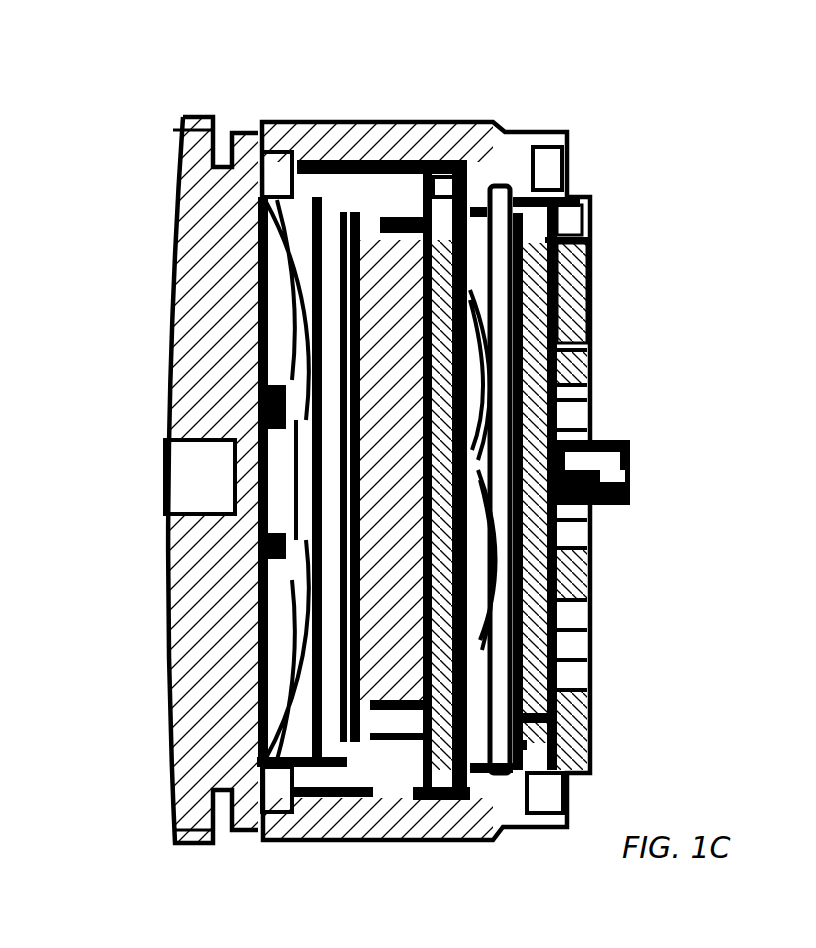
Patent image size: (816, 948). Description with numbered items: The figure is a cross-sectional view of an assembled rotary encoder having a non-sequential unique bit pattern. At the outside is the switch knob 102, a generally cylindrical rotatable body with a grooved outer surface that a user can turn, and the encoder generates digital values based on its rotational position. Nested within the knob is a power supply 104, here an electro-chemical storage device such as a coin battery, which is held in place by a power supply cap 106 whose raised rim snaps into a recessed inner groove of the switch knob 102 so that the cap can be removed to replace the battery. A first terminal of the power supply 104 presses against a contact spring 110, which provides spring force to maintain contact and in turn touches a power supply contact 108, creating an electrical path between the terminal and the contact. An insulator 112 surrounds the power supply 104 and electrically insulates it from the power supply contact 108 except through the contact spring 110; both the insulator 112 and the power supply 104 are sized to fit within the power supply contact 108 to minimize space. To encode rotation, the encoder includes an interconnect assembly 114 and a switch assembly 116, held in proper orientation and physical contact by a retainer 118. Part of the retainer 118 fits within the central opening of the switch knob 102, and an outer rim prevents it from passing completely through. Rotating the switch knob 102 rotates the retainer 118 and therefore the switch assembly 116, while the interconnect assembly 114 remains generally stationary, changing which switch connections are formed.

The switch knob 102 is at (487, 813).
The power supply 104 is at (398, 628).
The power supply cap 106 is at (158, 390).
The power supply contact 108 is at (383, 190).
The contact spring 110 is at (275, 318).
The insulator 112 is at (386, 192).
The interconnect assembly 114 is at (445, 229).
The switch assembly 116 is at (537, 291).
The retainer 118 is at (596, 296).